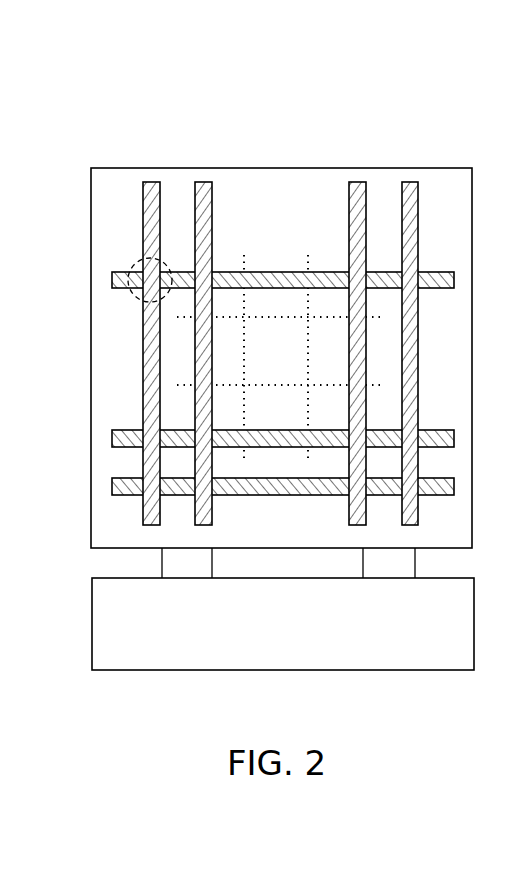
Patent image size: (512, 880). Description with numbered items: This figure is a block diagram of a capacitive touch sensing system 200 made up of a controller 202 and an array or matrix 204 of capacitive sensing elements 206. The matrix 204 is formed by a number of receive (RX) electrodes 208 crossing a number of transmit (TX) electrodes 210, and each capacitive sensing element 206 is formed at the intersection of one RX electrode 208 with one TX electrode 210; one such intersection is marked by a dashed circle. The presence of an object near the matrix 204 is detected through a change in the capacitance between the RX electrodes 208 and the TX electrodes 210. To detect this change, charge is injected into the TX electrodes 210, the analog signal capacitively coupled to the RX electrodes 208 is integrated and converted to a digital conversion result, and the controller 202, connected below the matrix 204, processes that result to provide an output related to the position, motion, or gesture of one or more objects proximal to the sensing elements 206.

The capacitive touch sensing system 200 is at (304, 124).
The controller 202 is at (283, 609).
The array or matrix 204 is at (253, 333).
The capacitive sensing element 206 is at (132, 263).
The receive (RX) electrode 208 is at (155, 181).
The transmit (TX) electrode 210 is at (112, 486).